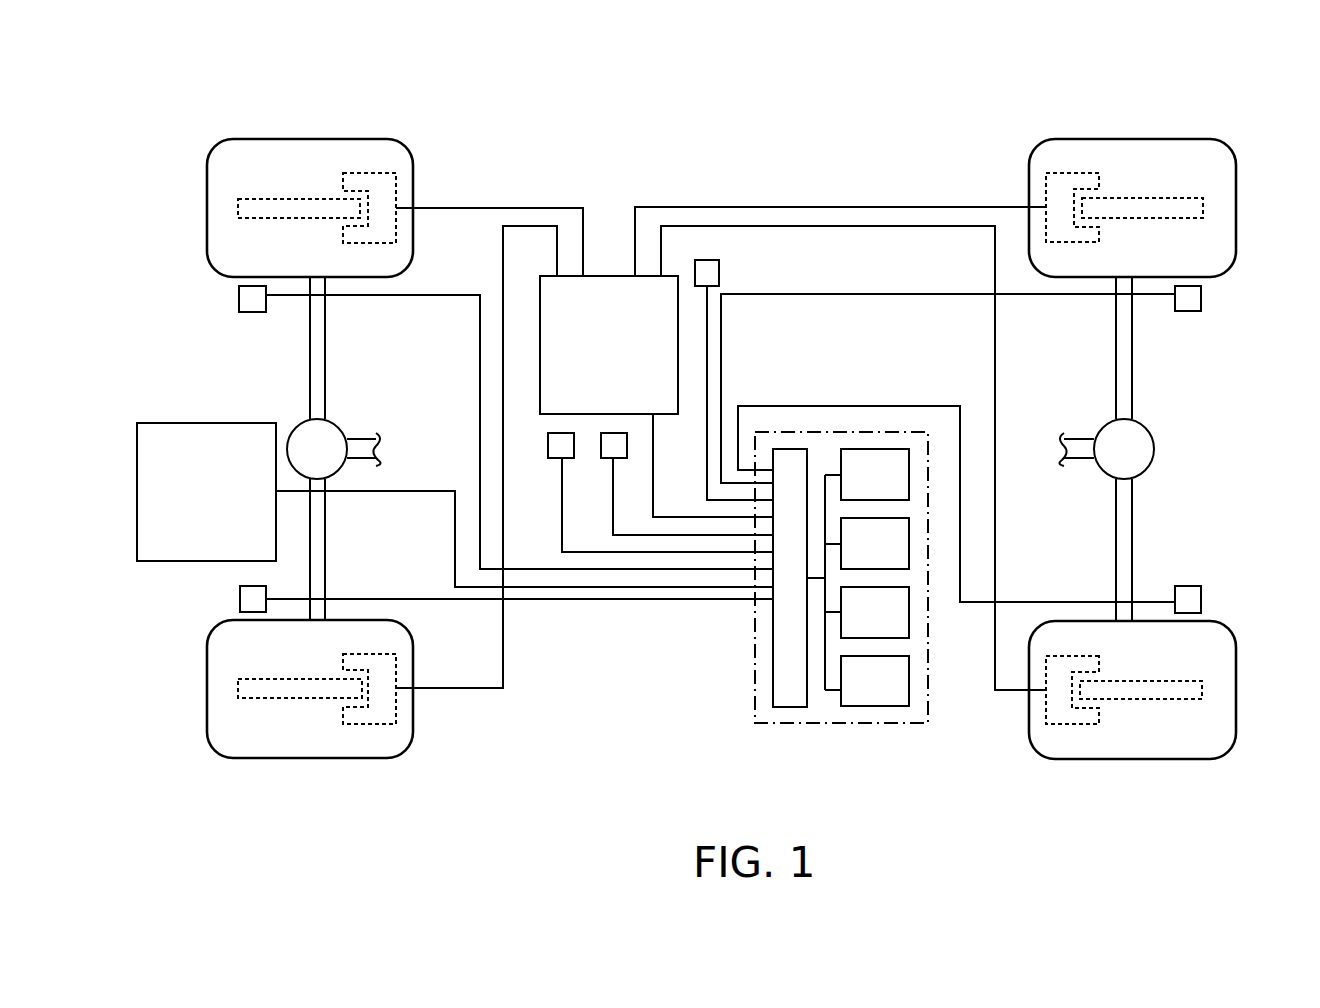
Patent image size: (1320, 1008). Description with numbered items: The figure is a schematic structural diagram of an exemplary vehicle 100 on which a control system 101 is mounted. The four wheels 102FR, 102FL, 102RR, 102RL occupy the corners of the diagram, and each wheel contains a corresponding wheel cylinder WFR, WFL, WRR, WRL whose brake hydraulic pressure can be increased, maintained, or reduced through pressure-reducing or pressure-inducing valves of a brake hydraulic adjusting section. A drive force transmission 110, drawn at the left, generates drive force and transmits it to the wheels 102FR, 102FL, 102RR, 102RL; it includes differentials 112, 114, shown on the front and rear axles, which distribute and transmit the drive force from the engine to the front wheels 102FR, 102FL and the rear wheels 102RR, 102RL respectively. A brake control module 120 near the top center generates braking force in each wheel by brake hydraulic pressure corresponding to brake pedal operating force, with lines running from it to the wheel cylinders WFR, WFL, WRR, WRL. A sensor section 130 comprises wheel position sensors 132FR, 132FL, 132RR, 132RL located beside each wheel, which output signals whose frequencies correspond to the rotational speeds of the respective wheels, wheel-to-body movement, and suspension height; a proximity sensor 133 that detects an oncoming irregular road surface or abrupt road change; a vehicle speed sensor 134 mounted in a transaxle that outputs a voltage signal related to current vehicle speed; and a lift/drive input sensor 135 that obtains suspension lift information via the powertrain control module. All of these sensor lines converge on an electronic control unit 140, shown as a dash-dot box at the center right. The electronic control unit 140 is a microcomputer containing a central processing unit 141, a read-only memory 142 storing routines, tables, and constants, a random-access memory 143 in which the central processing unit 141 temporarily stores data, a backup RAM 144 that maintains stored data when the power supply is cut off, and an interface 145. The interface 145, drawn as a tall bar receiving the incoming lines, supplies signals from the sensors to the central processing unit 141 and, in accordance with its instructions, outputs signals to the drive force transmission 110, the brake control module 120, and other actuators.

The vehicle 100 is at (150, 96).
The control system 101 is at (653, 183).
The front right wheel 102FR is at (240, 139).
The front left wheel 102FL is at (240, 758).
The rear right wheel 102RR is at (1200, 139).
The rear left wheel 102RL is at (1205, 759).
The front right wheel cylinder WFR is at (343, 185).
The front left wheel cylinder WFL is at (343, 713).
The rear right wheel cylinder WRR is at (1120, 170).
The rear left wheel cylinder WRL is at (1097, 712).
The drive force transmission 110 is at (206, 492).
The differential 112 is at (336, 423).
The differential 114 is at (1106, 423).
The brake control module 120 is at (609, 345).
The sensor section 130 is at (544, 493).
The front right wheel position sensor 132FR is at (253, 312).
The front left wheel position sensor 132FL is at (240, 600).
The rear right wheel position sensor 132RR is at (1186, 311).
The rear left wheel position sensor 132RL is at (1190, 586).
The proximity sensor 133 is at (548, 450).
The vehicle speed sensor 134 is at (627, 450).
The lift/drive input sensor 135 is at (740, 264).
The electronic control unit 140 is at (820, 597).
The central processing unit 141 is at (867, 474).
The read-only memory 142 is at (867, 543).
The random-access memory 143 is at (867, 612).
The backup RAM 144 is at (867, 681).
The interface 145 is at (773, 665).